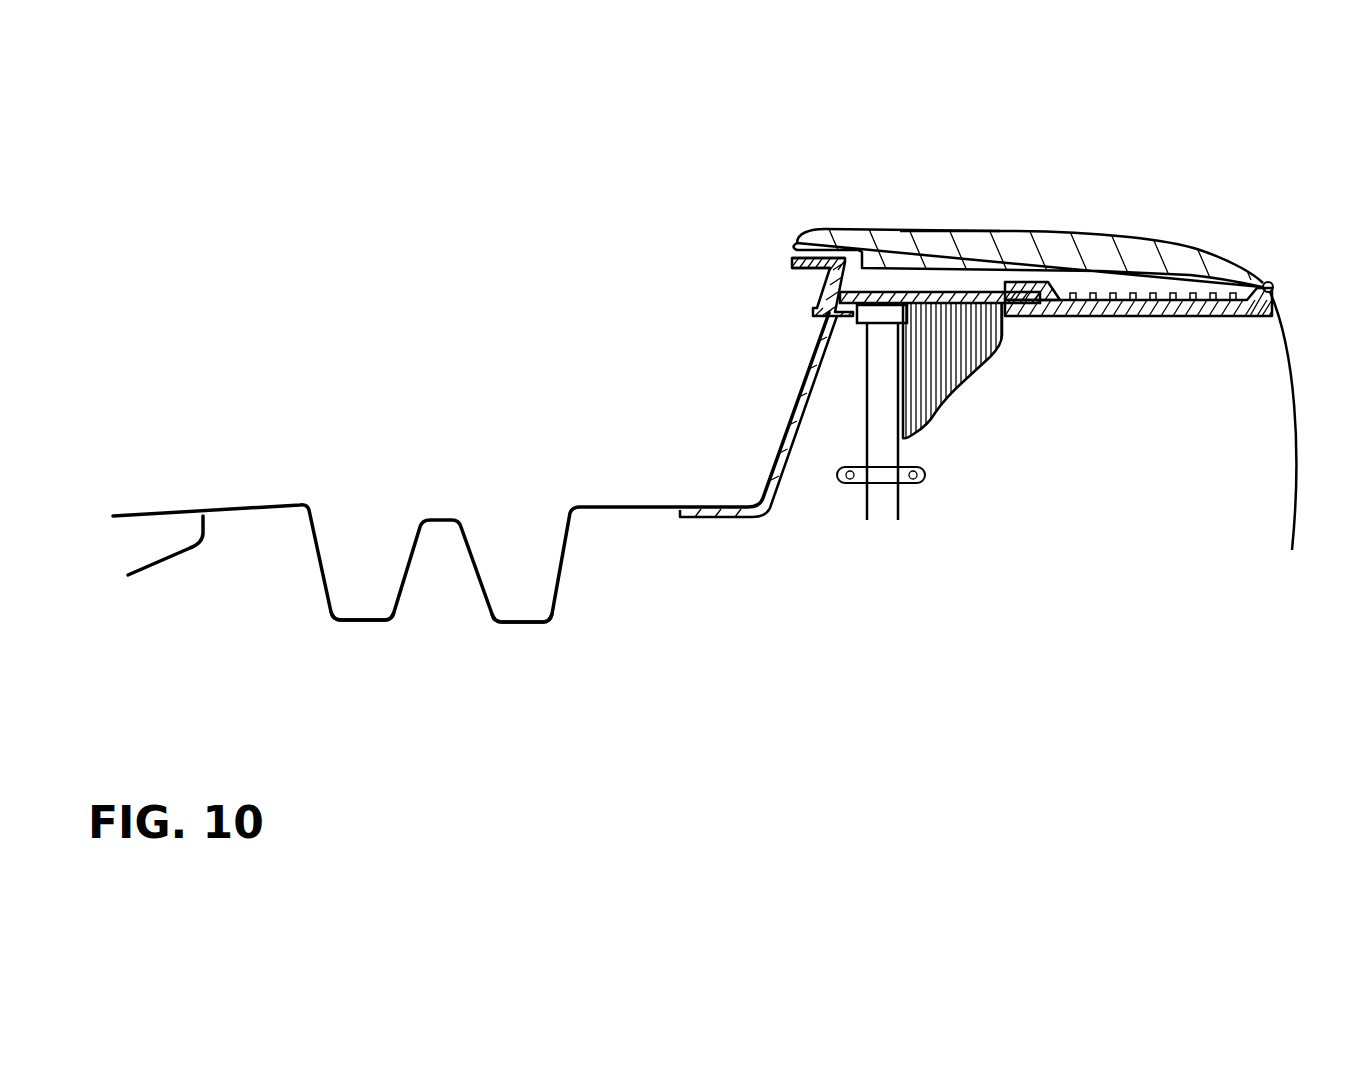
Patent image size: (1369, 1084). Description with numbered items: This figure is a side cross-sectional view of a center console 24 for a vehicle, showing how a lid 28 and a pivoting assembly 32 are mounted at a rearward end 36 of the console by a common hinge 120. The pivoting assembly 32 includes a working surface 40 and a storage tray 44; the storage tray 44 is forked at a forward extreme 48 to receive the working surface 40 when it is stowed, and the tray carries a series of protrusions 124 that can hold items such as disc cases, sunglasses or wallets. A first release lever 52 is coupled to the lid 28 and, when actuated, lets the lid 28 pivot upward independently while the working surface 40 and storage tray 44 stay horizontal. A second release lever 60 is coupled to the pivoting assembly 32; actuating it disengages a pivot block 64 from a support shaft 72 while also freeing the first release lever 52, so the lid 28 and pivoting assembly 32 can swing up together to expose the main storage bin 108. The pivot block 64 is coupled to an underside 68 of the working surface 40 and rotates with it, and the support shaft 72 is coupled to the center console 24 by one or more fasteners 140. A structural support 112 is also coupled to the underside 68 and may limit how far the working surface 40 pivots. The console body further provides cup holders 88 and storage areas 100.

The center console 24 is at (340, 285).
The lid 28 is at (893, 247).
The pivoting assembly 32 is at (986, 335).
The rearward end 36 is at (1288, 265).
The working surface 40 is at (960, 292).
The storage tray 44 is at (1268, 320).
The forward extreme 48 is at (1040, 318).
The first release lever 52 is at (790, 258).
The second release lever 60 is at (817, 310).
The pivot block 64 is at (855, 320).
The underside 68 is at (923, 305).
The support shaft 72 is at (885, 399).
The cup holders 88 is at (358, 602).
The storage areas 100 is at (168, 535).
The main storage bin 108 is at (1112, 499).
The structural support 112 is at (913, 397).
The hinge 120 is at (1273, 291).
The protrusions 124 is at (1153, 292).
The fasteners 140 is at (913, 485).